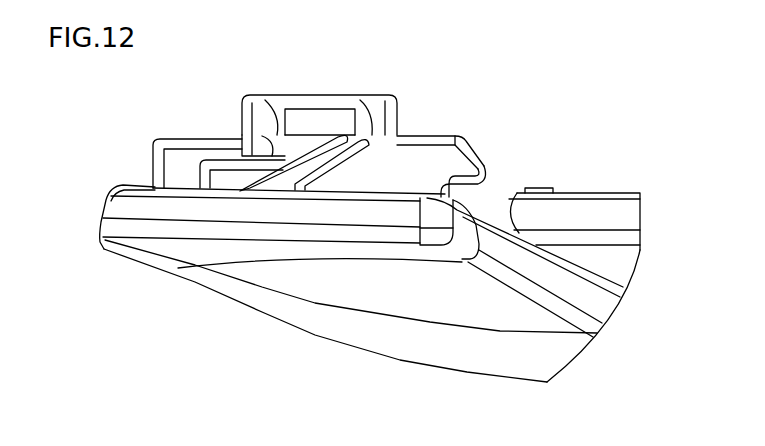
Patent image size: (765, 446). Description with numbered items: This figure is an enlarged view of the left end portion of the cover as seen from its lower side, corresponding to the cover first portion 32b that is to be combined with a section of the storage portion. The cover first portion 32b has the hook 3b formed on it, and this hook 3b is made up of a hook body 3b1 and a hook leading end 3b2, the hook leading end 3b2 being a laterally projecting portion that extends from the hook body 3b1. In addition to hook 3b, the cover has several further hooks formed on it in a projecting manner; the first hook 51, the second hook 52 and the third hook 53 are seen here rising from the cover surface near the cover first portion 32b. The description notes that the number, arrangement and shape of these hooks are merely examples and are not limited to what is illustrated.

The second hook 52 is at (183, 139).
The first hook 51 is at (227, 160).
The third hook 53 is at (322, 94).
The hook 3b is at (488, 149).
The hook body 3b1 is at (410, 170).
The hook leading end 3b2 is at (468, 163).
The cover first portion 32b is at (291, 274).